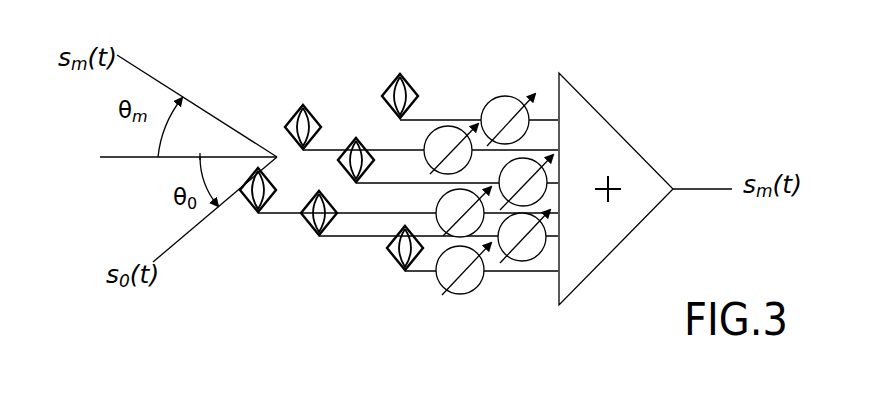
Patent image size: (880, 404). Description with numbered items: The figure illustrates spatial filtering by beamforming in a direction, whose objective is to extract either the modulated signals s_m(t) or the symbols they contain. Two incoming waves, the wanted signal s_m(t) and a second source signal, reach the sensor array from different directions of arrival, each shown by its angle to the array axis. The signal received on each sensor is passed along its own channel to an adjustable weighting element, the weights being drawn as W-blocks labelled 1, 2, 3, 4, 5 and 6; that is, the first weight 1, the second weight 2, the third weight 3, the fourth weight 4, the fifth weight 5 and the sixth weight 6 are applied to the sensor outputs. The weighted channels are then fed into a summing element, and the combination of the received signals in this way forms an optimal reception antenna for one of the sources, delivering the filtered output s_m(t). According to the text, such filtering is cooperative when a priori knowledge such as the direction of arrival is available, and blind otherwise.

The weight W1 (variable weighting element) 1 is at (508, 120).
The weight W2 (variable weighting element) 2 is at (451, 149).
The weight W3 (variable weighting element) 3 is at (526, 182).
The weight W4 (variable weighting element) 4 is at (463, 212).
The weight W5 (variable weighting element) 5 is at (524, 236).
The weight W6 (variable weighting element) 6 is at (463, 269).